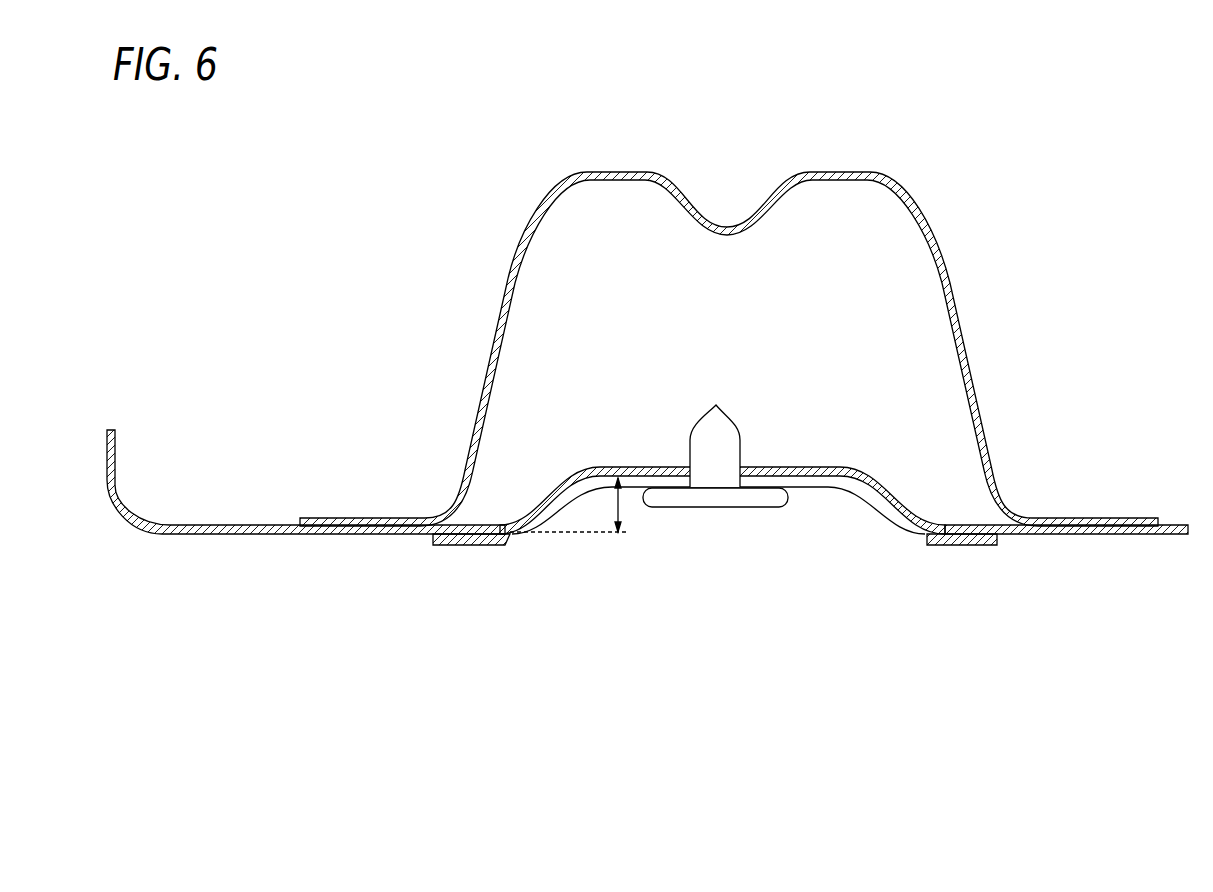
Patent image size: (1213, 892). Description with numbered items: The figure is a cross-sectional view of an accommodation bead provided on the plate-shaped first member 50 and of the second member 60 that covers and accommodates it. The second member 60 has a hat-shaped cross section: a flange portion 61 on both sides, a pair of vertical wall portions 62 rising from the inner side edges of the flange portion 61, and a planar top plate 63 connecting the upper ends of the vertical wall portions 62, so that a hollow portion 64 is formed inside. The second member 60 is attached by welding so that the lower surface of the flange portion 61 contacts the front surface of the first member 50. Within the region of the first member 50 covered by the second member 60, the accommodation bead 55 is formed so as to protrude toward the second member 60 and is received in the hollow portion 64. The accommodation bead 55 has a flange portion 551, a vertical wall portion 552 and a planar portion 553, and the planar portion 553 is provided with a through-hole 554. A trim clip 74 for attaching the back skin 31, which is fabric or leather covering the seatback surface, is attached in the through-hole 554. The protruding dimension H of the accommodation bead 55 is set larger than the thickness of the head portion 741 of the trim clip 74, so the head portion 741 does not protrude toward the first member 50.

The back skin 31 is at (975, 546).
The first member 50 is at (1174, 538).
The accommodation bead 55 is at (750, 442).
The flange portion 551 is at (953, 522).
The vertical wall portion 552 is at (535, 492).
The planar portion 553 is at (645, 468).
The through-hole 554 is at (736, 475).
The second member 60 is at (729, 321).
The flange portion 61 is at (1093, 518).
The vertical wall portion 62 is at (729, 321).
The top plate 63 is at (729, 321).
The hollow portion 64 is at (592, 312).
The trim clip 74 is at (717, 539).
The head portion 741 is at (690, 503).
The protruding dimension H is at (624, 537).